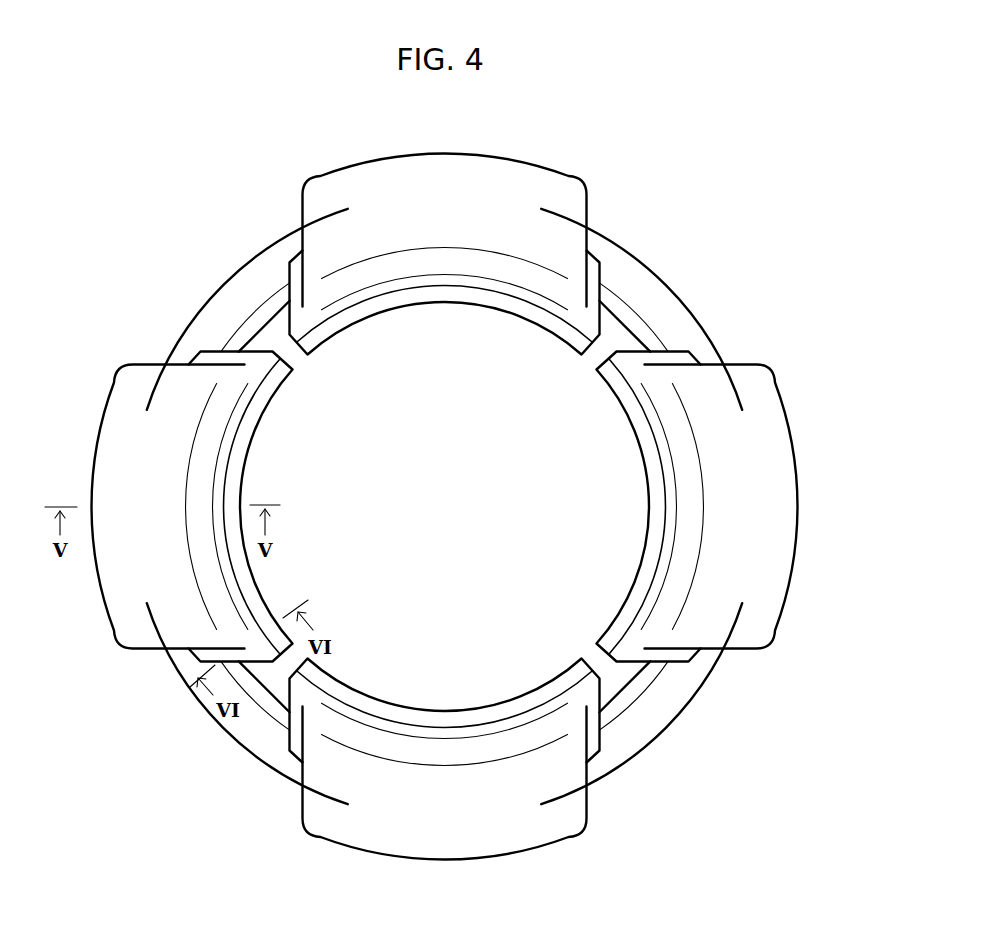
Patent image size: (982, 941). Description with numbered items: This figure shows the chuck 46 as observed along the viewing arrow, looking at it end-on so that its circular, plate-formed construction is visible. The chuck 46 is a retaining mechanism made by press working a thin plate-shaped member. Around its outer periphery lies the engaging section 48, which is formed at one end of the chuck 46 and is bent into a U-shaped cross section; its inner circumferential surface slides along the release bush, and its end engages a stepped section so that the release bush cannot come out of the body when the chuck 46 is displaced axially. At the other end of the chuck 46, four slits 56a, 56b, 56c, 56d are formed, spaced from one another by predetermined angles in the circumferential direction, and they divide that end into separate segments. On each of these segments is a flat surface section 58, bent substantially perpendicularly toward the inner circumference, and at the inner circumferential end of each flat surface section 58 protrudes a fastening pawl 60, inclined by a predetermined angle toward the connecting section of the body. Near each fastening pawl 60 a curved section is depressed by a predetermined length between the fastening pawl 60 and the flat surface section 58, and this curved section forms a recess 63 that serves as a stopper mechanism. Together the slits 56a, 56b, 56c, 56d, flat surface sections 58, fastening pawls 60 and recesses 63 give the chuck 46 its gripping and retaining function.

The chuck 46 is at (765, 144).
The engaging section 48 is at (630, 738).
The slit 56a is at (602, 350).
The slit 56b is at (600, 662).
The slit 56c is at (282, 668).
The slit 56d is at (287, 350).
The flat surface section 58 is at (511, 186).
The fastening pawl 60 is at (441, 291).
The recess 63 is at (549, 305).